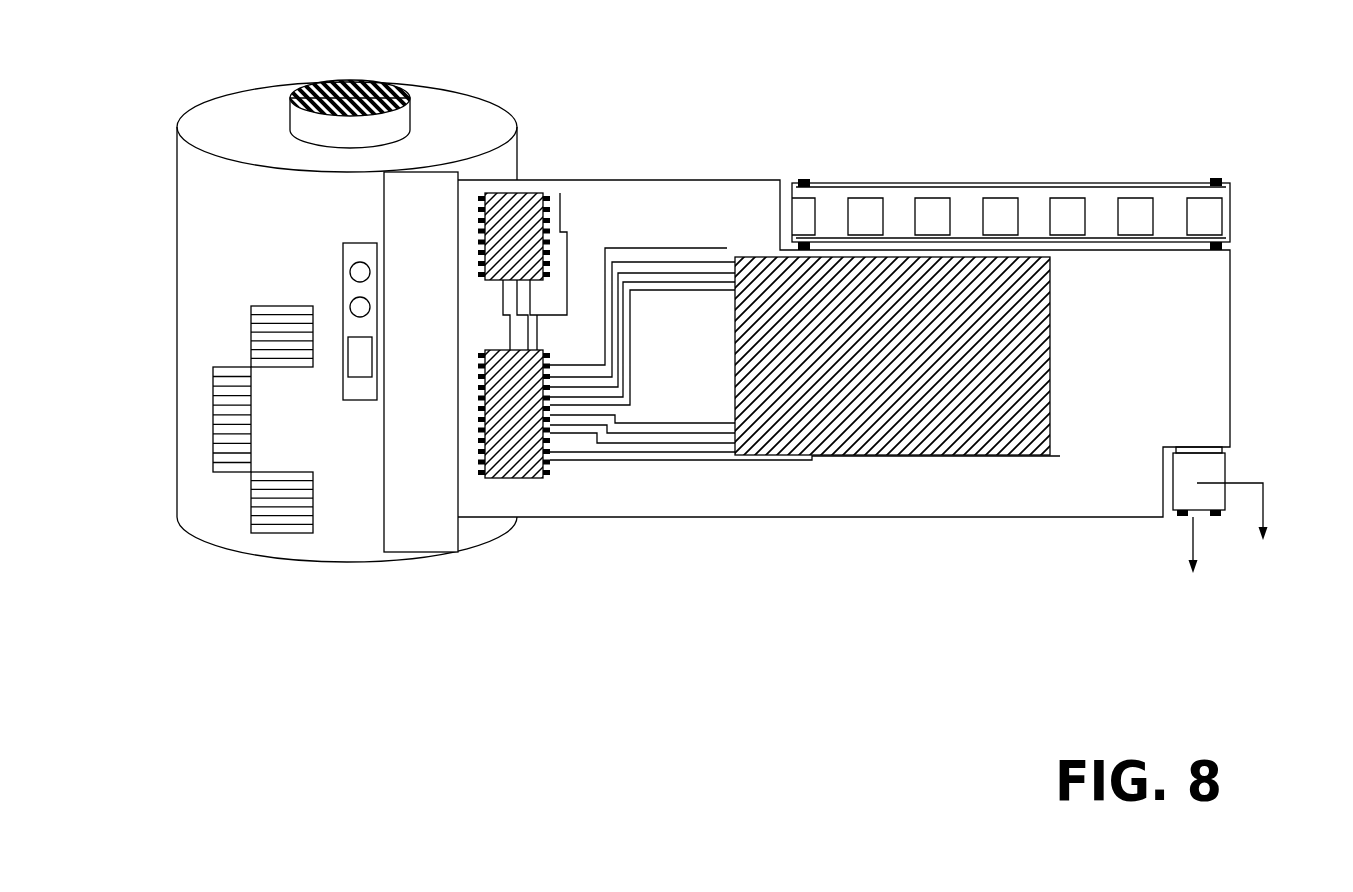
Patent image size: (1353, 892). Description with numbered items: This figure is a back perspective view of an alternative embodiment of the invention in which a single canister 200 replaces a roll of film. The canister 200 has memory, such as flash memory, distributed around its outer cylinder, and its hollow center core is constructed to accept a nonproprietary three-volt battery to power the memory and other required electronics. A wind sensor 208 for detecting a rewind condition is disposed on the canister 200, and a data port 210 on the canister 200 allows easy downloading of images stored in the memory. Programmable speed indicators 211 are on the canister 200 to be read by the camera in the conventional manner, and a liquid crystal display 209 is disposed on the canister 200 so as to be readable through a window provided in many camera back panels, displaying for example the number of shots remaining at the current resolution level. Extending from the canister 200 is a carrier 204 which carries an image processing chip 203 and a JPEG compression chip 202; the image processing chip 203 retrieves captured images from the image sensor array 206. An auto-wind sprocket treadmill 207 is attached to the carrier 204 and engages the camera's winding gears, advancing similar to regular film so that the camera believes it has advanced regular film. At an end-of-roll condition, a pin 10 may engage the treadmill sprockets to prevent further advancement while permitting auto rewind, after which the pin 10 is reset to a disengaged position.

The pin 10 is at (1219, 536).
The canister 200 is at (341, 565).
The JPEG compression chip 202 is at (510, 478).
The image processing chip 203 is at (522, 200).
The carrier 204 is at (592, 174).
The image sensor array 206 is at (1037, 325).
The treadmill 207 is at (1235, 463).
The wind sensor 208 is at (390, 88).
The liquid crystal display 209 is at (362, 389).
The data port 210 is at (342, 277).
The programmable speed indicators 211 is at (268, 383).